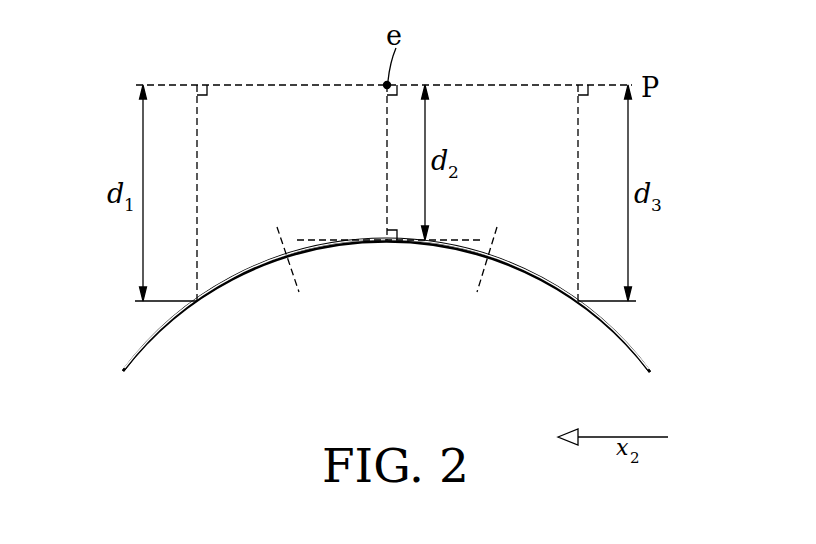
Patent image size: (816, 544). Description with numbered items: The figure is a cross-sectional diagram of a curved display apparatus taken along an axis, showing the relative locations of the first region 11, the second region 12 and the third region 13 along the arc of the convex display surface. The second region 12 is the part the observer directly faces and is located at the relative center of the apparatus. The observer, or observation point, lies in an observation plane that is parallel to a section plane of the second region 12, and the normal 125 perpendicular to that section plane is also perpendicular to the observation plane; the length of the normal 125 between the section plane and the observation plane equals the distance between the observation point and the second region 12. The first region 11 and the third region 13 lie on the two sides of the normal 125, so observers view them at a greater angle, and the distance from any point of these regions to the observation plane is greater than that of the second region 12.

The first region 11 is at (193, 307).
The second region 12 is at (396, 243).
The third region 13 is at (583, 305).
The normal 125 is at (387, 158).